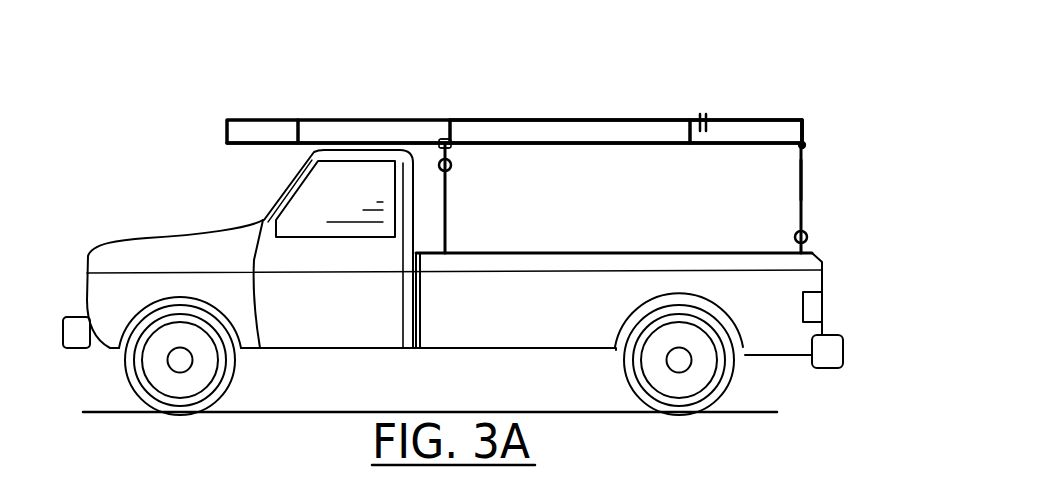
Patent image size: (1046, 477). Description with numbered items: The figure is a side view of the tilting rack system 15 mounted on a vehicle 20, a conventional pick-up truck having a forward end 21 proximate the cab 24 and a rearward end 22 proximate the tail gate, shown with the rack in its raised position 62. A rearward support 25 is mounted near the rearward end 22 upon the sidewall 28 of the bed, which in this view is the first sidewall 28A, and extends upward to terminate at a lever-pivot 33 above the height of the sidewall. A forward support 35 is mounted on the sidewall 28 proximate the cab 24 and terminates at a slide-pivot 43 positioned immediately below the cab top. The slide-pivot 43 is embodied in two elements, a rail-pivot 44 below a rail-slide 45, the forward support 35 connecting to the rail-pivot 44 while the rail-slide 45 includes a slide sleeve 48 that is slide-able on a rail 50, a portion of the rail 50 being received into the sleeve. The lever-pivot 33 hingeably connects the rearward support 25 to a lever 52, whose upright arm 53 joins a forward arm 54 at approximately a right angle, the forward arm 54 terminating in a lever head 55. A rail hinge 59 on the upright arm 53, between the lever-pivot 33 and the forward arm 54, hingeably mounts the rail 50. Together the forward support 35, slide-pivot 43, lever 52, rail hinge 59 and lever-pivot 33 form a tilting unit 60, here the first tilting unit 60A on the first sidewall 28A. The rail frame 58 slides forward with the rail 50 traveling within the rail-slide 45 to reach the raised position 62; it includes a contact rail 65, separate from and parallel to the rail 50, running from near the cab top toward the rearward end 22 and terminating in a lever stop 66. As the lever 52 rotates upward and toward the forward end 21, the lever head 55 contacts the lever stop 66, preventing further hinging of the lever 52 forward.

The tilting rack system 15 is at (570, 66).
The vehicle 20 is at (447, 330).
The forward end 21 is at (113, 338).
The rearward end 22 is at (806, 343).
The cab 24 is at (322, 333).
The rearward support 25 is at (795, 249).
The sidewall 28 is at (527, 295).
The first sidewall 28A is at (600, 295).
The lever-pivot 33 is at (796, 232).
The forward support 35 is at (449, 241).
The slide-pivot 43 is at (443, 137).
The rail-pivot 44 is at (451, 169).
The rail-slide 45 is at (440, 143).
The slide sleeve 48 is at (452, 149).
The rail 50 is at (560, 150).
The lever 52 is at (799, 162).
The upright arm 53 is at (803, 178).
The forward arm 54 is at (781, 119).
The lever head 55 is at (708, 118).
The rail frame 58 is at (500, 113).
The rail hinge 59 is at (808, 147).
The tilting unit 60 is at (848, 270).
The first tilting unit 60A is at (868, 234).
The raised position 62 is at (838, 98).
The contact rail 65 is at (538, 119).
The lever stop 66 is at (699, 117).